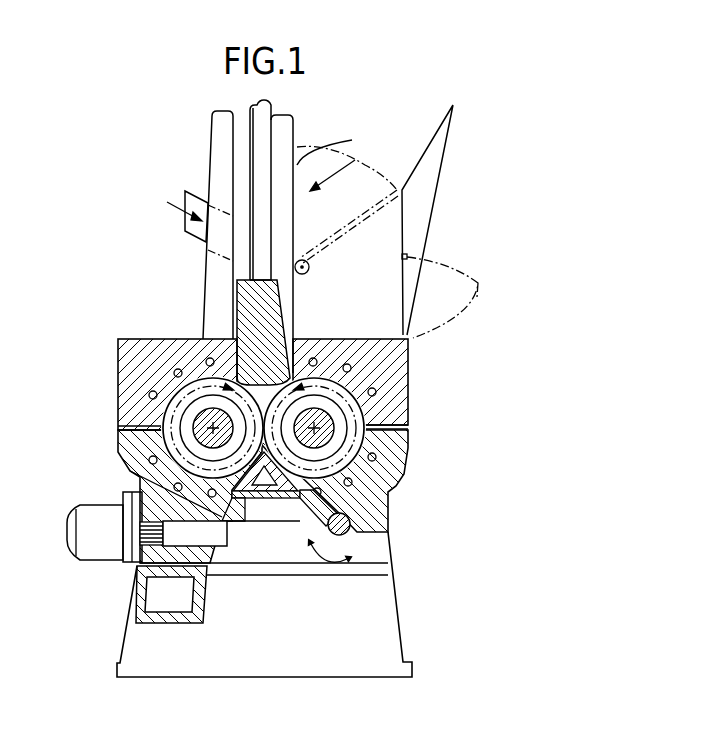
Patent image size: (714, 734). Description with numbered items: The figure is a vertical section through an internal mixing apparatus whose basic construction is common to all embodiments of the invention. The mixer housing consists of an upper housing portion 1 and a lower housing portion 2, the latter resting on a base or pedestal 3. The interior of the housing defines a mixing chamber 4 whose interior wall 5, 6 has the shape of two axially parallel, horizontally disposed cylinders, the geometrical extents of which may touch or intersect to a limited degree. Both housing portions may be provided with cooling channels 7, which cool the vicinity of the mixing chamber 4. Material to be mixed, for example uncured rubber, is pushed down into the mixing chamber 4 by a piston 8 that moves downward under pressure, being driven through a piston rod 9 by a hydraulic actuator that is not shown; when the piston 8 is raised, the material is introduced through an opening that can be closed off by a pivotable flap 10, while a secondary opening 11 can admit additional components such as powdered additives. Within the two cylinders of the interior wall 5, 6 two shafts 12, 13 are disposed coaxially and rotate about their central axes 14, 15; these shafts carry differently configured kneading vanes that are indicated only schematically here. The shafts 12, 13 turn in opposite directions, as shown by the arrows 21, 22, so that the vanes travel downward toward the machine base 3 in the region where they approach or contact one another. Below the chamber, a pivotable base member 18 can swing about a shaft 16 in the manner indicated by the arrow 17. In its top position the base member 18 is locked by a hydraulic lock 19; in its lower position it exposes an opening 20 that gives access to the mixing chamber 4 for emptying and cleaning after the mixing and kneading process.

The upper housing portion 1 is at (402, 357).
The lower housing portion 2 is at (383, 489).
The base 3 is at (390, 647).
The mixing chamber 4 is at (145, 488).
The interior wall 5 is at (182, 457).
The interior wall 6 is at (360, 462).
The cooling channels 7 is at (150, 395).
The piston 8 is at (238, 320).
The piston rod 9 is at (262, 137).
The pivotable flap 10 is at (372, 207).
The secondary opening 11 is at (190, 200).
The shaft 12 is at (335, 415).
The shaft 13 is at (196, 420).
The central axis 14 is at (330, 436).
The central axis 15 is at (192, 432).
The shaft 16 is at (350, 533).
The arrow 17 is at (330, 562).
The pivotable base member 18 is at (272, 500).
The hydraulic lock 19 is at (215, 532).
The opening 20 is at (243, 500).
The arrow 21 is at (318, 380).
The arrow 22 is at (202, 378).